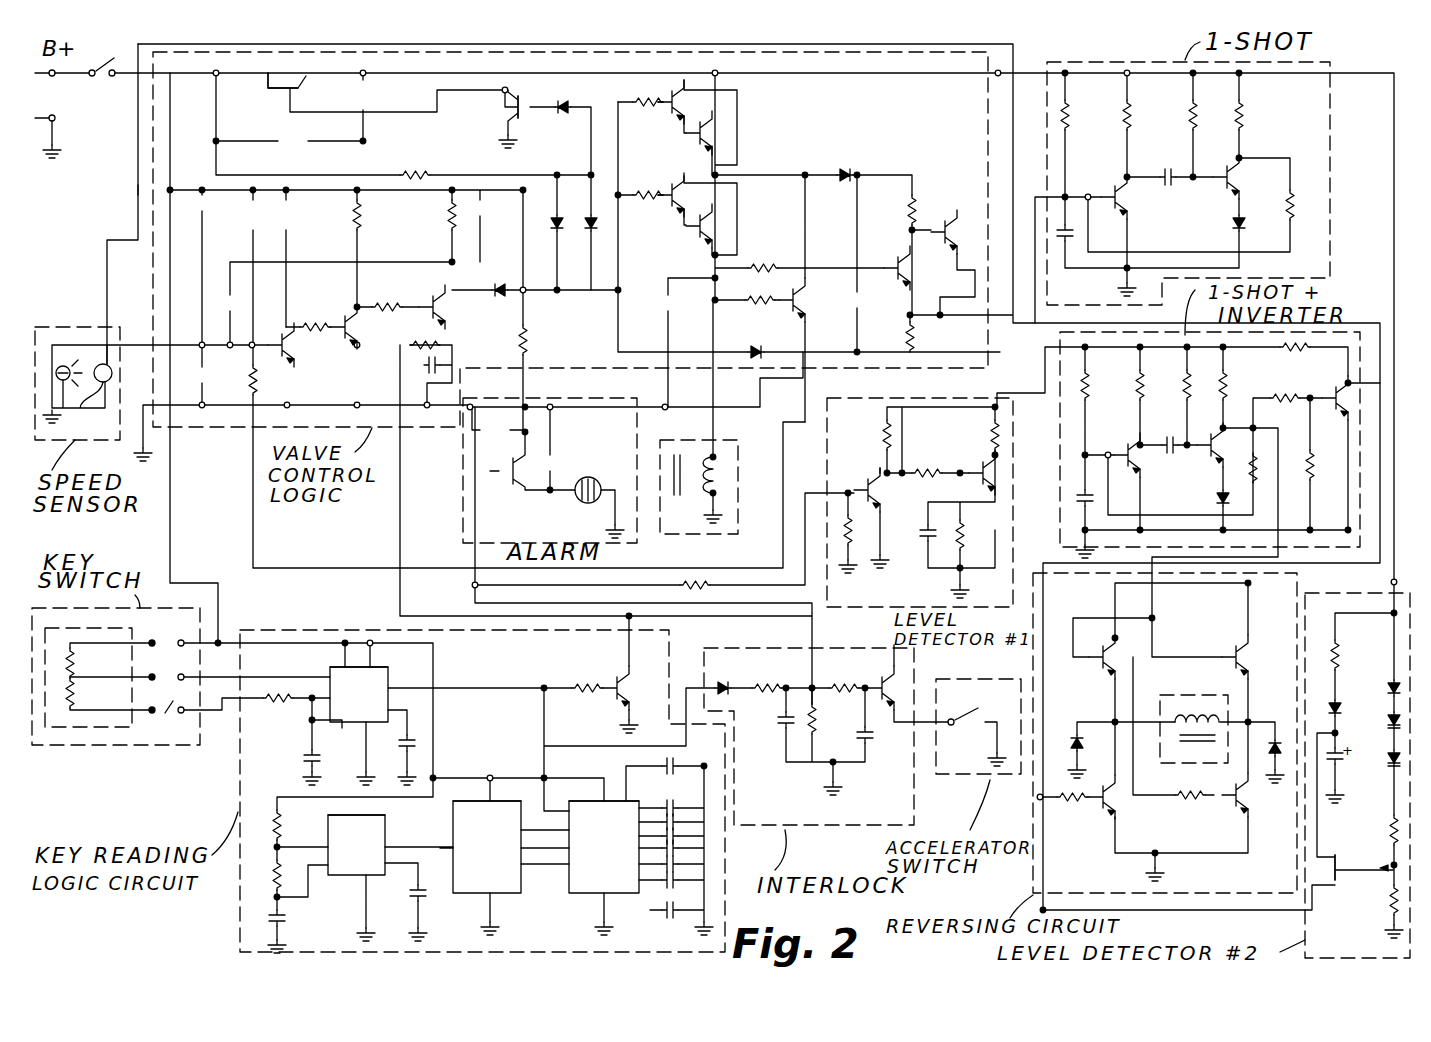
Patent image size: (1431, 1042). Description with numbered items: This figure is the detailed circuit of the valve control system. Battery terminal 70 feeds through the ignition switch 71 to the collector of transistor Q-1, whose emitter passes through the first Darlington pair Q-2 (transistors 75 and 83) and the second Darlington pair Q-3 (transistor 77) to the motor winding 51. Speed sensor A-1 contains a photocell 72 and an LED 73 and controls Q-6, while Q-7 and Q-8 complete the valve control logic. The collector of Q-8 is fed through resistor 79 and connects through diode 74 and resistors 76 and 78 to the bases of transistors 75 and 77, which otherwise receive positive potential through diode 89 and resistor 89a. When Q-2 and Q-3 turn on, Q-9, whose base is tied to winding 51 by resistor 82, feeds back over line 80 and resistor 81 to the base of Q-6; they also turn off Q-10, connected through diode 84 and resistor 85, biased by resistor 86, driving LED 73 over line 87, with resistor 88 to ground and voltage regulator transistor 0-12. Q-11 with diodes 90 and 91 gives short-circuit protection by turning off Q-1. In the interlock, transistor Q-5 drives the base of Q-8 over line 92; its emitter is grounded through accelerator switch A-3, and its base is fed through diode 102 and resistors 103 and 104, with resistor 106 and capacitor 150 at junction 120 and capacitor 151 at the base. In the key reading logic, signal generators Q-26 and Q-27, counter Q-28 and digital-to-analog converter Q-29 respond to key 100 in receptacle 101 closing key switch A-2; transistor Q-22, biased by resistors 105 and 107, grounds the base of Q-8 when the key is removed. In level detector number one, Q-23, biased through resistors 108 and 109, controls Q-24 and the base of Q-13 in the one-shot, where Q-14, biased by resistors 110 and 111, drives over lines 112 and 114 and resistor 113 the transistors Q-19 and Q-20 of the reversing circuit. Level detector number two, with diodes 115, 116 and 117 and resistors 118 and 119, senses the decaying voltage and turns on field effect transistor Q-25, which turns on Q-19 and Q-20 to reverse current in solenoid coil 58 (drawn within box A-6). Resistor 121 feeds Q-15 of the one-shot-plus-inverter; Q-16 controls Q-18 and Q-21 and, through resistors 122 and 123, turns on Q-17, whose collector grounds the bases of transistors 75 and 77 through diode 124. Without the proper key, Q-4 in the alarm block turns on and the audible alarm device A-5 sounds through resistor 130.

The positive terminal 70 is at (52, 78).
The ignition switch 71 is at (98, 75).
The photocell 72 is at (70, 405).
The LED 73 is at (109, 348).
The diode 74 is at (500, 284).
The transistor 75 is at (647, 90).
The resistor 76 is at (672, 118).
The transistor 77 is at (676, 225).
The resistor 78 is at (650, 203).
The resistor 79 is at (450, 238).
The line 80 is at (806, 320).
The resistor 81 is at (251, 385).
The resistor 82 is at (755, 298).
The second transistor 83 is at (696, 150).
The diode 84 is at (845, 170).
The resistor 85 is at (915, 195).
The resistor 86 is at (765, 265).
The line 87 is at (138, 190).
The resistor 88 is at (905, 335).
The diode 89 is at (552, 220).
The resistor 89a is at (418, 172).
The diode 90 is at (591, 232).
The diode 91 is at (568, 105).
The line 92 is at (383, 305).
The electronic key 100 is at (75, 745).
The key receptacle 101 is at (168, 720).
The diode 102 is at (718, 683).
The resistor 103 is at (762, 684).
The resistor 104 is at (816, 704).
The resistor 105 is at (584, 686).
The resistor 106 is at (817, 732).
The resistor 107 is at (362, 225).
The resistor 108 is at (712, 583).
The resistor 109 is at (885, 437).
The resistor 110 is at (1193, 115).
The resistor 111 is at (1243, 122).
The line 112 is at (1380, 222).
The resistor 113 is at (1068, 805).
The line 114 is at (1132, 878).
The diode 115 is at (1357, 656).
The diode 116 is at (1390, 718).
The diode 117 is at (1388, 758).
The resistor 118 is at (1390, 833).
The resistor 119 is at (1388, 905).
The junction 120 is at (786, 684).
The resistor 121 is at (988, 428).
The resistor 122 is at (1283, 352).
The resistor 123 is at (1283, 402).
The diode 124 is at (755, 348).
The resistor 130 is at (528, 335).
The capacitor 150 is at (784, 724).
The capacitor 151 is at (870, 742).
The motor winding 51 is at (700, 500).
The solenoid coil 58 is at (1190, 745).
The transistor Q-1 is at (292, 86).
The first Darlington pair Q-2 is at (725, 132).
The second Darlington pair Q-3 is at (725, 225).
The transistor Q-4 is at (493, 483).
The transistor Q-5 is at (904, 678).
The transistor Q-6 is at (297, 345).
The transistor Q-7 is at (348, 327).
The transistor Q-8 is at (449, 329).
The transistor Q-9 is at (810, 300).
The transistor Q-10 is at (893, 260).
The transistor Q-11 is at (510, 106).
The transistor 0-12 is at (948, 224).
The transistor Q-13 is at (1119, 205).
The second transistor Q-14 is at (1247, 193).
The transistor Q-15 is at (1132, 469).
The transistor Q-16 is at (1205, 464).
The transistor Q-17 is at (1333, 392).
The transistor Q-18 is at (1092, 672).
The transistor Q-19 is at (1228, 647).
The transistor Q-20 is at (1117, 812).
The transistor Q-21 is at (1258, 795).
The transistor Q-22 is at (613, 680).
The transistor Q-23 is at (904, 509).
The transistor Q-24 is at (957, 463).
The field effect transistor Q-25 is at (1351, 883).
The signal generator Q-26 is at (358, 685).
The signal generator Q-27 is at (356, 858).
The counter Q-28 is at (490, 815).
The digital-to-analog converter Q-29 is at (601, 815).
The speed sensor A-1 is at (71, 313).
The key switch A-2 is at (166, 621).
The accelerator switch A-3 is at (956, 741).
The audible alarm device A-5 is at (590, 477).
The relay coil A-6 is at (1189, 683).